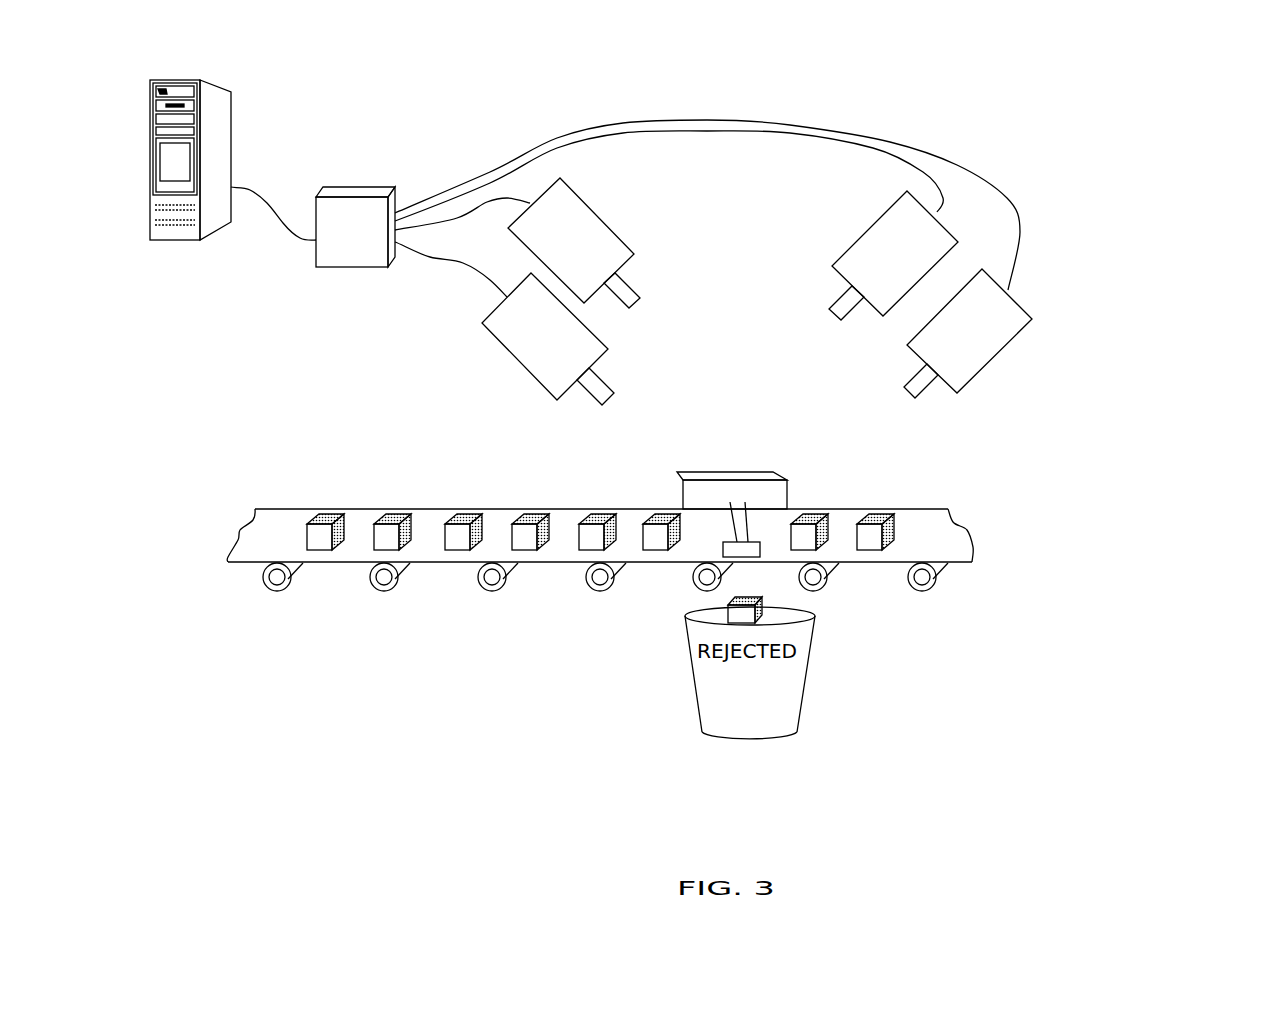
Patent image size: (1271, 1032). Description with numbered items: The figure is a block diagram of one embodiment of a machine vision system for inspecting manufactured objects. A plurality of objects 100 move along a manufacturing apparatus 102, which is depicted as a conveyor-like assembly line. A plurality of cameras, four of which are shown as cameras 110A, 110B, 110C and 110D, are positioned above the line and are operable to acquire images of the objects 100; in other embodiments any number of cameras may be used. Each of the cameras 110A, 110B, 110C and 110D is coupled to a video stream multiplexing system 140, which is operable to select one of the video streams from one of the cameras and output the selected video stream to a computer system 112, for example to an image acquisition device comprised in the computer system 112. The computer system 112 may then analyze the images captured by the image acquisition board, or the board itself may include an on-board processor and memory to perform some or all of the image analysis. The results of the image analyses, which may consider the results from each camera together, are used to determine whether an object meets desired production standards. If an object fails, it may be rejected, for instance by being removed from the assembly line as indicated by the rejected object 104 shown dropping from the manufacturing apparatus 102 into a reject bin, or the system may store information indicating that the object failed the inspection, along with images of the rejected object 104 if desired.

The computer system 112 is at (168, 252).
The video stream multiplexing system 140 is at (355, 267).
The camera 110A is at (498, 356).
The camera 110B is at (695, 199).
The camera 110C is at (997, 357).
The camera 110D is at (870, 227).
The objects 100 is at (348, 508).
The manufacturing apparatus 102 is at (948, 552).
The rejected object 104 is at (745, 615).